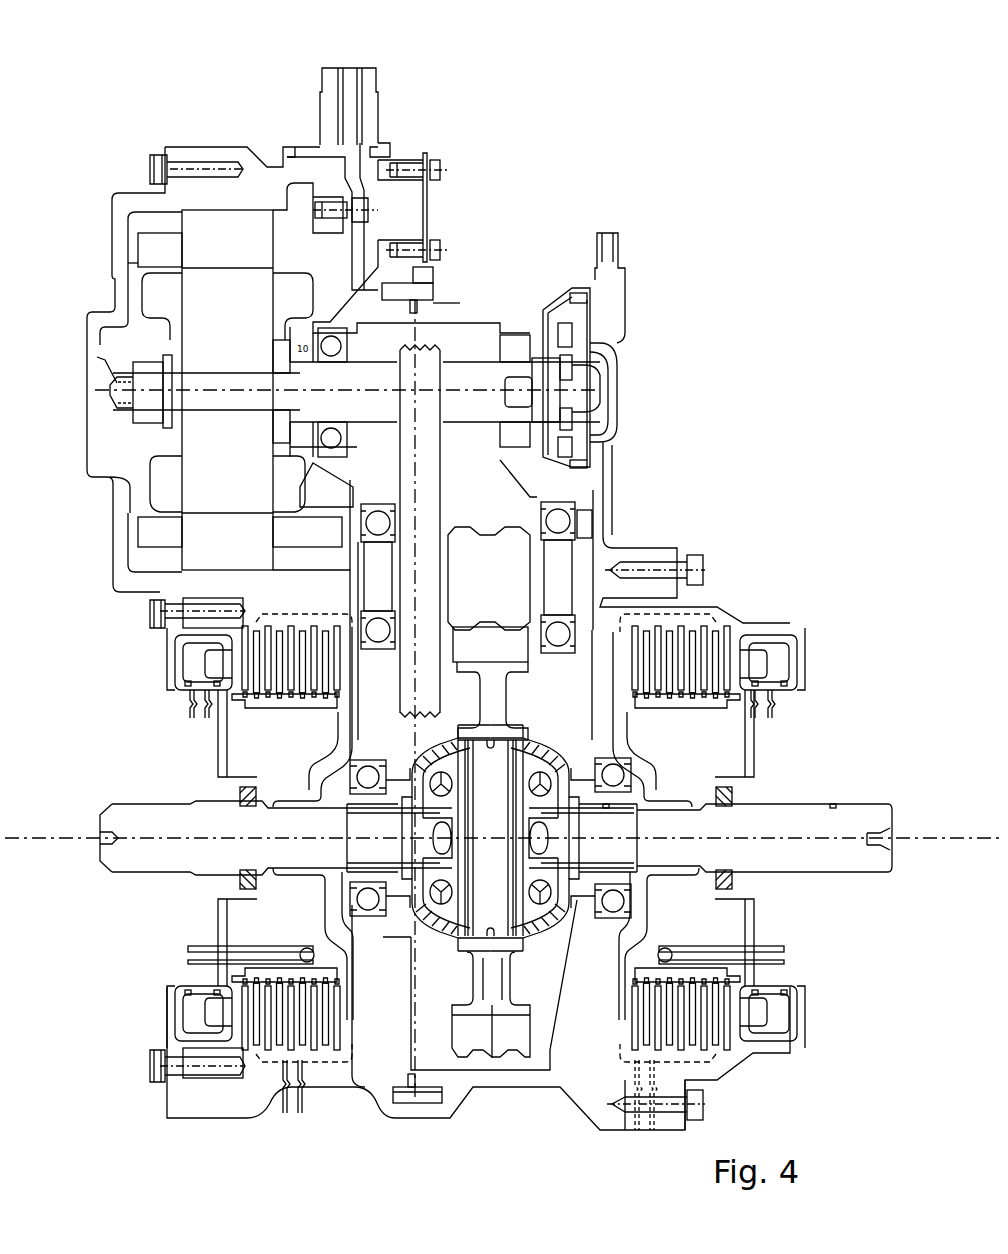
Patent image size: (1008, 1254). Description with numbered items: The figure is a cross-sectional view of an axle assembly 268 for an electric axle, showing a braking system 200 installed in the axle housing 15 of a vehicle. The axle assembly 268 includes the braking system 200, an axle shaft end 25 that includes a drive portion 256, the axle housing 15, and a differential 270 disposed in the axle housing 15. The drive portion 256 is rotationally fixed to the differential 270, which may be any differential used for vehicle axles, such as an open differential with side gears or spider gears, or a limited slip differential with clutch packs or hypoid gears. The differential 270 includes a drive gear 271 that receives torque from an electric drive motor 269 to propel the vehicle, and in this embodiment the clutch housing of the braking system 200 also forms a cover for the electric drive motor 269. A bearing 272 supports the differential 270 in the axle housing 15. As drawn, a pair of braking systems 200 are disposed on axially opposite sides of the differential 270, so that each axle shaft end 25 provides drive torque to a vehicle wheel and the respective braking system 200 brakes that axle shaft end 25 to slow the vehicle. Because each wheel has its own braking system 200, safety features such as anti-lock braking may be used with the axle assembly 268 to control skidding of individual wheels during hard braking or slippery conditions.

The axle housing 15 is at (377, 1075).
The axle shaft end 25 is at (183, 827).
The braking system 200 is at (150, 655).
The drive portion 256 is at (567, 823).
The axle assembly 268 is at (497, 262).
The electric drive motor 269 is at (195, 250).
The differential 270 is at (547, 740).
The drive gear 271 is at (508, 1043).
The bearing 272 is at (373, 895).